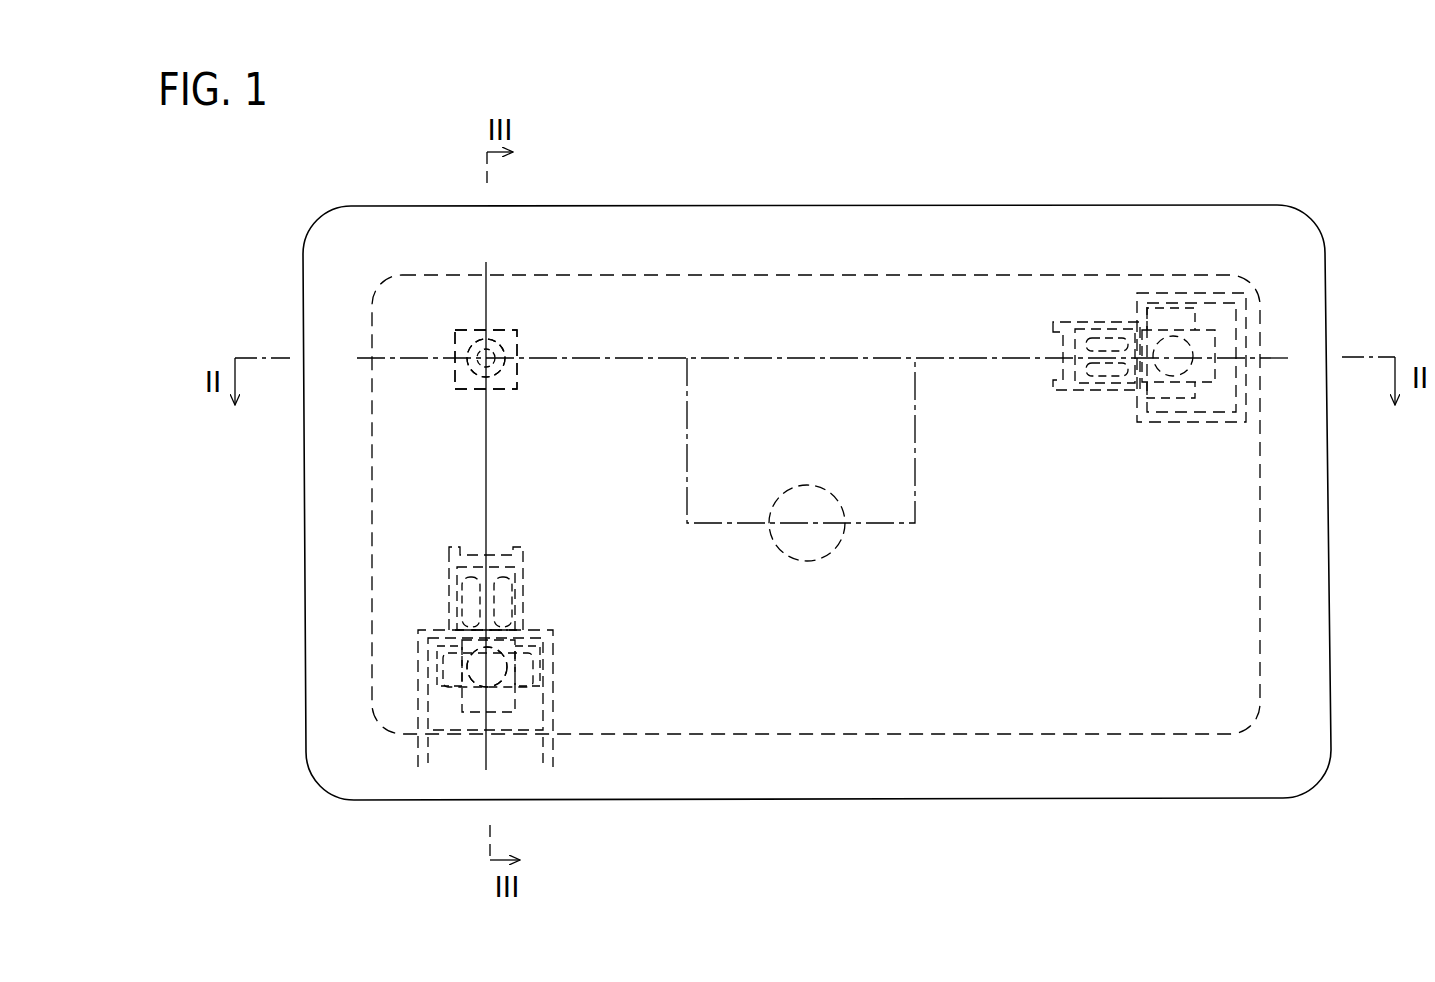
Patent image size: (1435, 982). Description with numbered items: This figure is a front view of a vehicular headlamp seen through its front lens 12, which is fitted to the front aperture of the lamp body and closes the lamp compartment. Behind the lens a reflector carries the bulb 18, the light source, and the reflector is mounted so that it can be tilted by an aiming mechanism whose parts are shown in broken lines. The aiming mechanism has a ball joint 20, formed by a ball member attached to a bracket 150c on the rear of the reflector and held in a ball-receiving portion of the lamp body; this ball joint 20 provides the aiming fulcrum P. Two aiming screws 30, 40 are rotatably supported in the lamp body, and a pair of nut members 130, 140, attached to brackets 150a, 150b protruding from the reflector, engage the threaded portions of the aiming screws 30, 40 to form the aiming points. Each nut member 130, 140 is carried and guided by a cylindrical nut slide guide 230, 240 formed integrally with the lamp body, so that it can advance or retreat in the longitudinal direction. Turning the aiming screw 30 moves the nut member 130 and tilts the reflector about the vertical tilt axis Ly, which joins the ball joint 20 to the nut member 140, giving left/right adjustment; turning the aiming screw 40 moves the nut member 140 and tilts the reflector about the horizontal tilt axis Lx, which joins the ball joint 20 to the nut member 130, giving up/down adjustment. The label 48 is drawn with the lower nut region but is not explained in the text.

The front lens 12 is at (730, 696).
The bulb 18 is at (800, 562).
The aiming fulcrum P is at (450, 342).
The ball joint 20 is at (496, 333).
The bracket 150c is at (517, 328).
The tilt axis Lx is at (948, 358).
The vertical tilt axis Ly is at (485, 481).
The bracket 150a is at (1092, 320).
The nut slide guide 230 is at (1170, 291).
The nut member 130 is at (1202, 326).
The aiming screw 30 is at (1197, 348).
The bracket 150b is at (446, 577).
The electrode 48 is at (460, 640).
The aiming screw 40 is at (470, 681).
The nut member 140 is at (468, 683).
The nut slide guide 240 is at (558, 685).